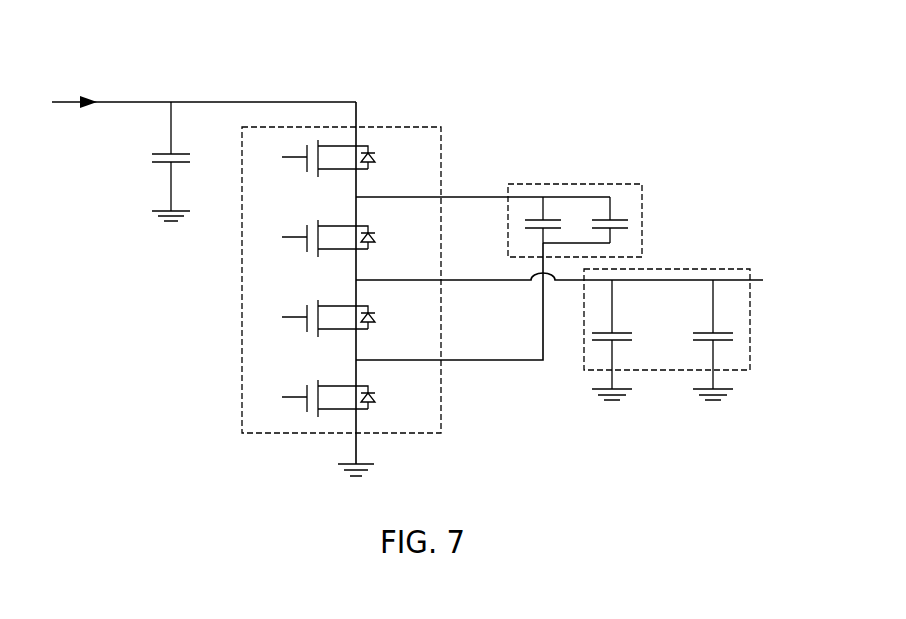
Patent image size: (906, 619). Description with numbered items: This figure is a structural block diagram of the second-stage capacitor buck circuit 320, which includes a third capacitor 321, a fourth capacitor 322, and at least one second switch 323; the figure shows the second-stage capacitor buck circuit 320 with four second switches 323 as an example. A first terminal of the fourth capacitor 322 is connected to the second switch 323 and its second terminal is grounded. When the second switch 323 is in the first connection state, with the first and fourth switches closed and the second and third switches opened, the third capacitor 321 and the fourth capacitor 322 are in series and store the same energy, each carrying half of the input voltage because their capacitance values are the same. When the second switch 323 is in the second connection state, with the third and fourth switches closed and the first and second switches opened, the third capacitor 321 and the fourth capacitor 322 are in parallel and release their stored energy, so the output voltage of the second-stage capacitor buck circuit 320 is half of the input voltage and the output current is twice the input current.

The second-stage capacitor buck circuit 320 is at (207, 47).
The third capacitor 321 is at (585, 184).
The fourth capacitor 322 is at (703, 270).
The second switch 323 is at (417, 128).